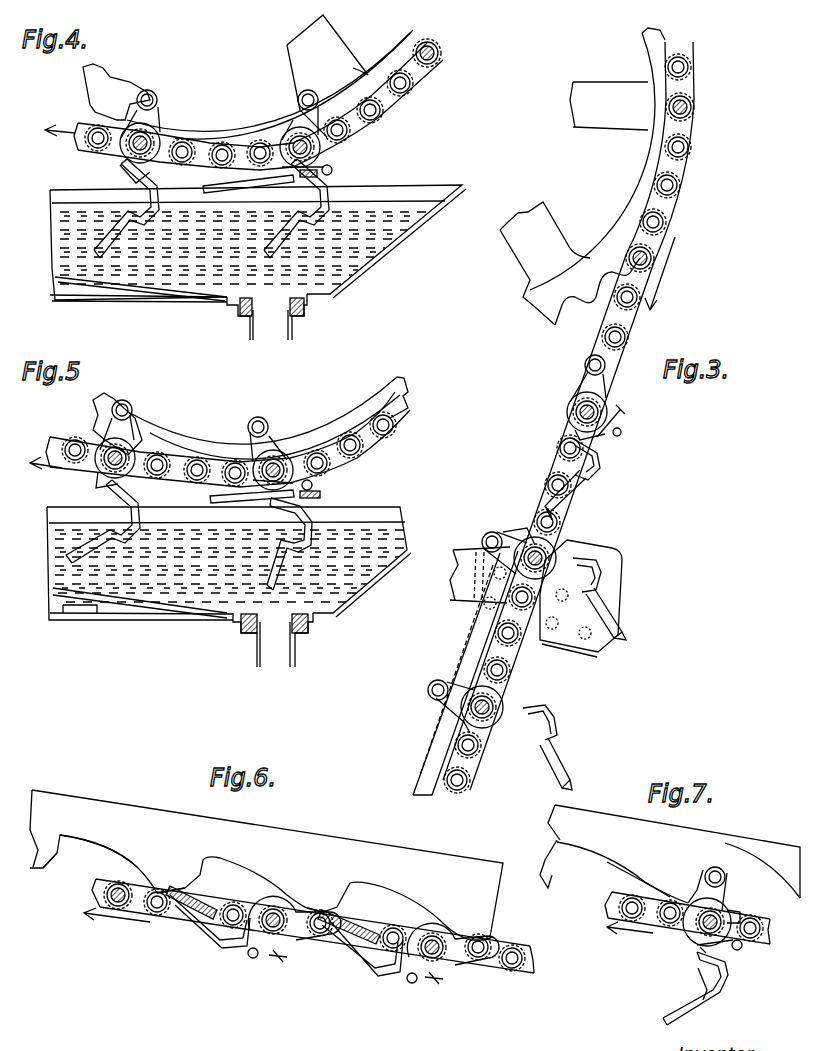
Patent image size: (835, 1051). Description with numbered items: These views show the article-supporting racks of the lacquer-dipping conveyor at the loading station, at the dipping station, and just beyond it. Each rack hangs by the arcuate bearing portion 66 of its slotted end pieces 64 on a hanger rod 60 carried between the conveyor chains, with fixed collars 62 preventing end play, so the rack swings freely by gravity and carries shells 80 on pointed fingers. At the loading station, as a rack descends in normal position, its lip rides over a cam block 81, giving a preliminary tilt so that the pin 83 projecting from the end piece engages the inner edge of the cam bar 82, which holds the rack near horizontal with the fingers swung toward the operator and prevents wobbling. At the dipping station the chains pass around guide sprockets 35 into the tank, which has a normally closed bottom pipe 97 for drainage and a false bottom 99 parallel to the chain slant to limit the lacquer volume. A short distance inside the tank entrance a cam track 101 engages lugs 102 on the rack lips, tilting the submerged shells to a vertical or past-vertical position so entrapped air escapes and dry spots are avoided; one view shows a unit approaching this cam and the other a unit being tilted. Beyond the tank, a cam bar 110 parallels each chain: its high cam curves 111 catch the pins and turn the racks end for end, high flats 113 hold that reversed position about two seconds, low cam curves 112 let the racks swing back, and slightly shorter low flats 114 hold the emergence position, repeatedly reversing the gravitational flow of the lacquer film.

In FIG. 4, the guide sprockets 35 is at (345, 67).
In FIG. 4, the hanger rod 60 is at (436, 55).
In FIG. 5, the hanger rod 60 is at (284, 456).
In FIG. 3, the hanger rod 60 is at (694, 105).
In FIG. 7, the fixed collars 62 is at (727, 907).
In FIG. 4, the end pieces 64 is at (303, 124).
In FIG. 5, the end pieces 64 is at (280, 437).
In FIG. 3, the end pieces 64 is at (465, 705).
In FIG. 6, the end pieces 64 is at (300, 945).
In FIG. 7, the end pieces 64 is at (725, 897).
In FIG. 7, the arcuate bearing portion 66 is at (740, 950).
In FIG. 4, the shell 80 is at (255, 238).
In FIG. 5, the shell 80 is at (266, 562).
In FIG. 7, the shell 80 is at (673, 998).
In FIG. 3, the cam block 81 is at (598, 556).
In FIG. 3, the cam bar 82 is at (467, 643).
In FIG. 4, the pin 83 is at (143, 90).
In FIG. 5, the pin 83 is at (128, 406).
In FIG. 3, the pin 83 is at (430, 694).
In FIG. 6, the pin 83 is at (325, 935).
In FIG. 7, the pin 83 is at (720, 868).
In FIG. 4, the bottom pipe 97 is at (274, 324).
In FIG. 5, the bottom pipe 97 is at (277, 645).
In FIG. 4, the false bottom 99 is at (120, 297).
In FIG. 5, the false bottom 99 is at (130, 617).
In FIG. 4, the cam track 101 is at (245, 178).
In FIG. 5, the cam track 101 is at (227, 494).
In FIG. 4, the lugs 102 is at (333, 171).
In FIG. 5, the lugs 102 is at (314, 485).
In FIG. 6, the lugs 102 is at (249, 957).
In FIG. 6, the cam bar 110 is at (102, 818).
In FIG. 6, the high cam curves 111 is at (57, 858).
In FIG. 6, the low cam curves 112 is at (274, 882).
In FIG. 6, the high flats 113 is at (33, 868).
In FIG. 7, the high flats 113 is at (680, 890).
In FIG. 6, the low flats 114 is at (220, 860).
In FIG. 7, the low flats 114 is at (572, 840).